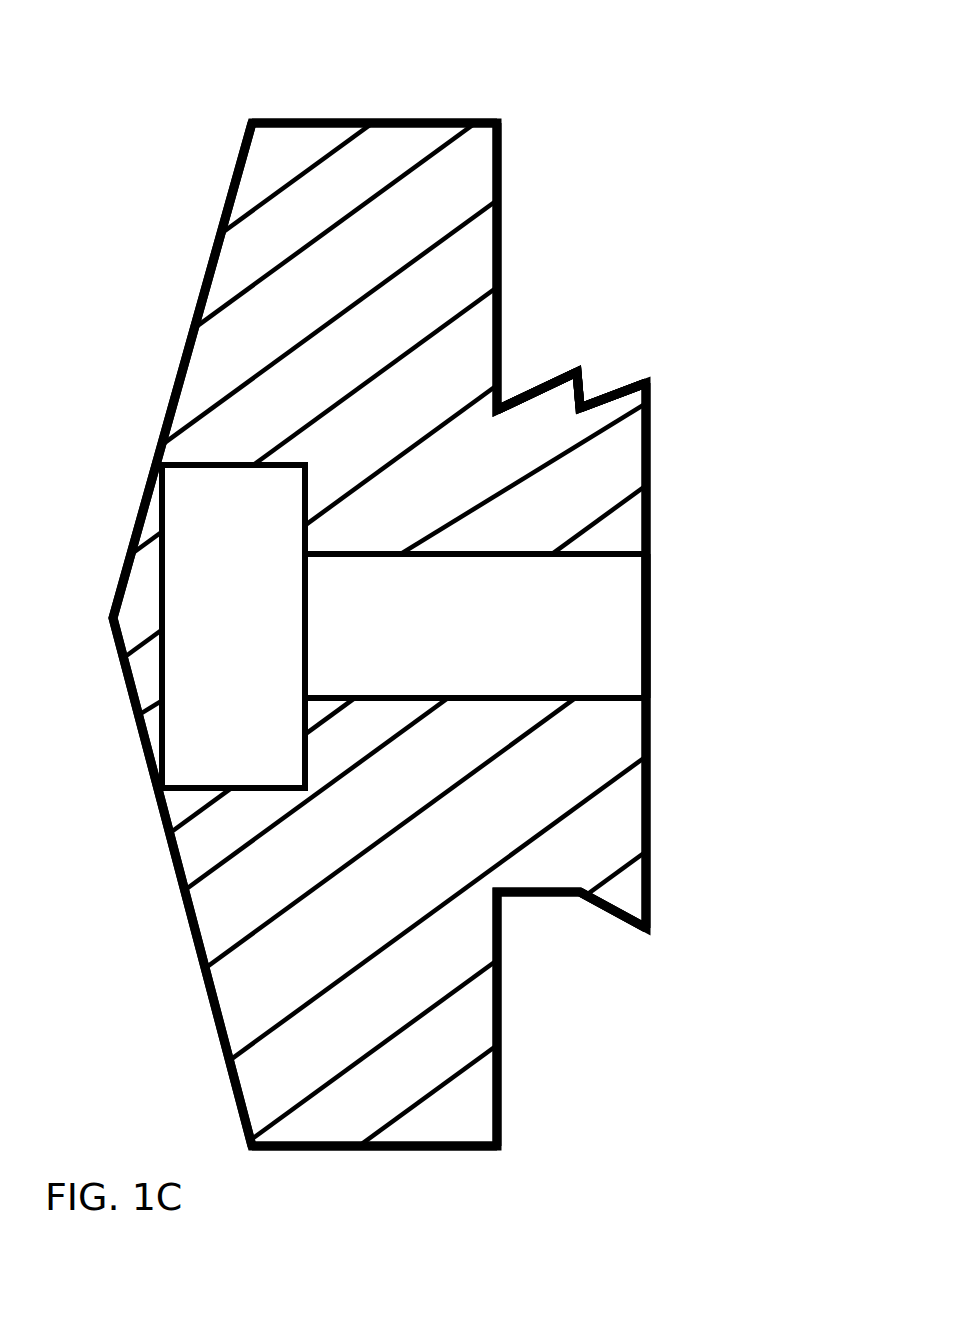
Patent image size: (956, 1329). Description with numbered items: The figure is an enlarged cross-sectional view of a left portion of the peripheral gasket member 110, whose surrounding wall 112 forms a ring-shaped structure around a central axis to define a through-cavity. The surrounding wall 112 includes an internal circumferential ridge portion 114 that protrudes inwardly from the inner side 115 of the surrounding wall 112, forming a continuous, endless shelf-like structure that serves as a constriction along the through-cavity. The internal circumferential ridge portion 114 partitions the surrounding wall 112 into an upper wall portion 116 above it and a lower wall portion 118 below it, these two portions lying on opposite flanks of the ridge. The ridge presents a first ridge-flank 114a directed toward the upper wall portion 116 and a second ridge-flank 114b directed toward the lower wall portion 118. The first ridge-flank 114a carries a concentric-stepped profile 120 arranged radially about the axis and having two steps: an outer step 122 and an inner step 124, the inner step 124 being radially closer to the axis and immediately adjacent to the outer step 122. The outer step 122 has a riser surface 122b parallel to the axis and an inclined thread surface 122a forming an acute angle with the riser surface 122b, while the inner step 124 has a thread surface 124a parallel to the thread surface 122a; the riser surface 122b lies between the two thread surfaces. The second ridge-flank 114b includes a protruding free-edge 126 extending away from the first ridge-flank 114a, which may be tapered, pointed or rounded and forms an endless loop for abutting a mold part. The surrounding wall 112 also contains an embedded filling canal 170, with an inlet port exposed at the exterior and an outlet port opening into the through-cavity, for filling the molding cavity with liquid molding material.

The peripheral gasket member 110 is at (208, 260).
The surrounding wall 112 is at (227, 352).
The internal circumferential ridge portion 114 is at (617, 795).
The first ridge-flank 114a is at (688, 172).
The second ridge-flank 114b is at (612, 965).
The inner side 115 is at (695, 668).
The upper wall portion 116 is at (287, 213).
The lower wall portion 118 is at (275, 1092).
The concentric-stepped profile 120 is at (672, 93).
The outer step 122 is at (545, 312).
The thread surface 122a is at (540, 387).
The riser surface 122b is at (583, 392).
The inner step 124 is at (625, 307).
The thread surface 124a is at (630, 385).
The protruding free-edge 126 is at (650, 930).
The filling canal 170 is at (608, 597).